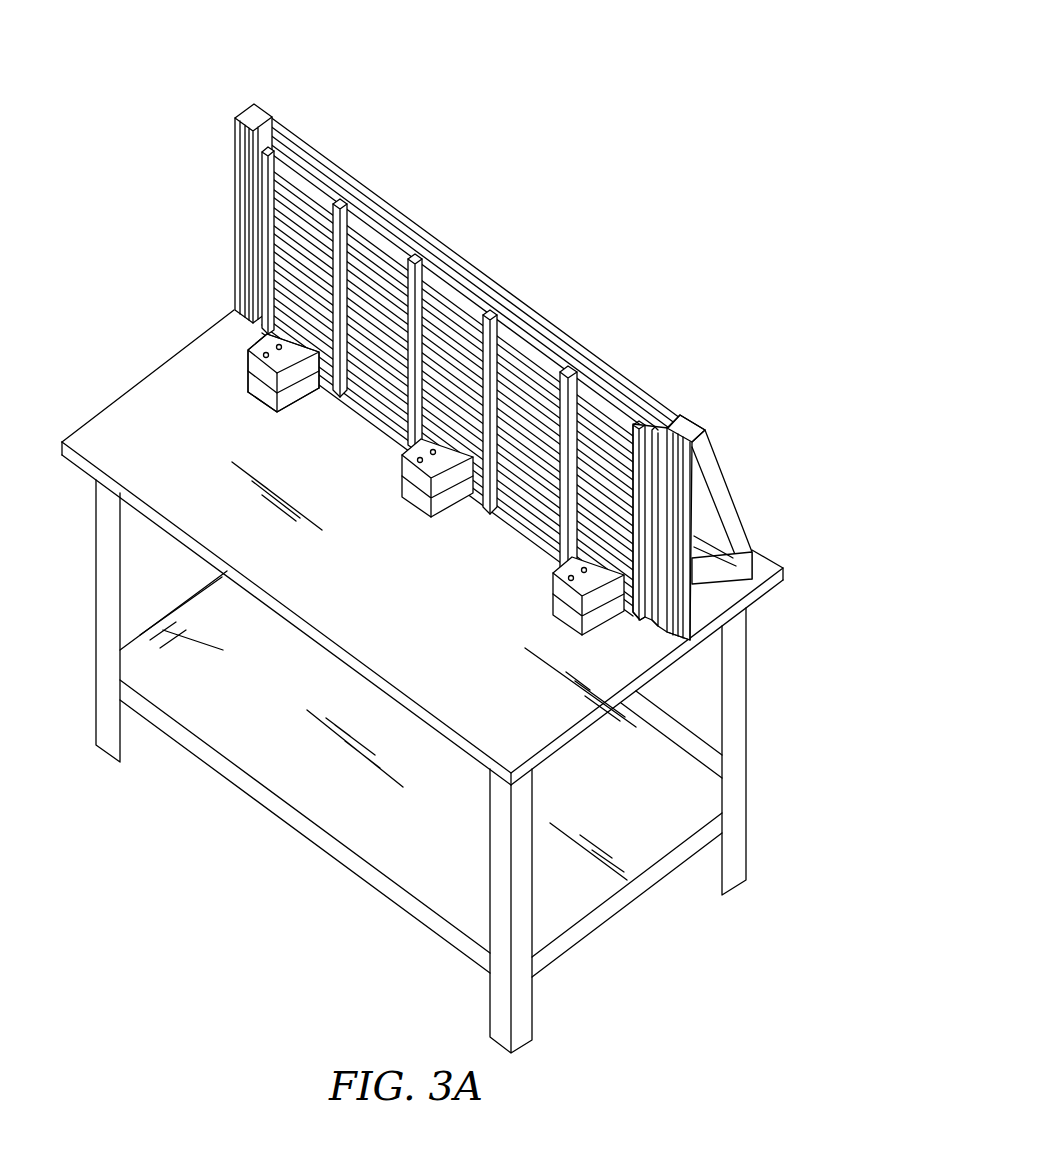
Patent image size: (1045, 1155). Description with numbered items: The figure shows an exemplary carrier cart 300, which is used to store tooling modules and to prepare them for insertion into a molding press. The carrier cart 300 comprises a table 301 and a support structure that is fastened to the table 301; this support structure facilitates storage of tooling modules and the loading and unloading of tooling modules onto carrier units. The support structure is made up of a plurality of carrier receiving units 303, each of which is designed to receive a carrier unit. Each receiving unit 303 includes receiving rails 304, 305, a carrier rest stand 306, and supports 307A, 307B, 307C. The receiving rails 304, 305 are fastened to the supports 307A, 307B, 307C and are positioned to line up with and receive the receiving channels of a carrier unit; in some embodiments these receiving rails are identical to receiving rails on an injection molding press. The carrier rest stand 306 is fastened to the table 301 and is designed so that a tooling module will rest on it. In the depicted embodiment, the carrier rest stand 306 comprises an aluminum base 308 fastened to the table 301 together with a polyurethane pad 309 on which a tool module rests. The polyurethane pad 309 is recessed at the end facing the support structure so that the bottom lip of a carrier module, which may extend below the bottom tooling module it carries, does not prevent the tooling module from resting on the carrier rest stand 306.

The carrier cart 300 is at (406, 537).
The table 301 is at (117, 433).
The carrier receiving unit 303 is at (429, 367).
The receiving rail 304 is at (237, 165).
The receiving rail 305 is at (366, 203).
The carrier rest stand 306 is at (252, 375).
The support 307A is at (318, 164).
The support 307B is at (237, 252).
The support 307C is at (237, 290).
The aluminum base 308 is at (267, 392).
The polyurethane pad 309 is at (250, 342).